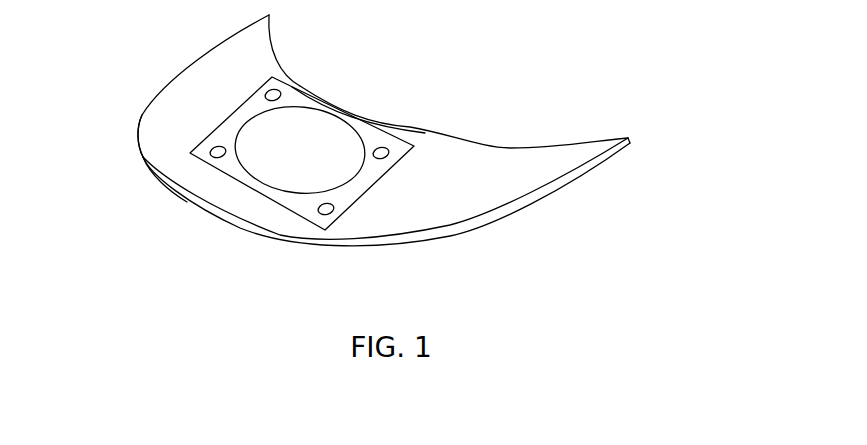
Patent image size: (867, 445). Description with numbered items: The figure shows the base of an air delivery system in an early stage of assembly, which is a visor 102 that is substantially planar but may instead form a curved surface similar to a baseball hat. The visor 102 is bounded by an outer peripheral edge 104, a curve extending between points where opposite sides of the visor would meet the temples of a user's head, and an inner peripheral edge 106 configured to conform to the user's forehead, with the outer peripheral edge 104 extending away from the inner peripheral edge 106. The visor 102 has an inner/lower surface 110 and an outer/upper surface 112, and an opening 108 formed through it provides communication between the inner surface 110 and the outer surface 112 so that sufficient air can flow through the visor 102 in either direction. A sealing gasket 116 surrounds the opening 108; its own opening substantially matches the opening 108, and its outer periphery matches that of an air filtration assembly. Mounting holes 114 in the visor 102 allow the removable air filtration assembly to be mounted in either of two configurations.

The visor 102 is at (477, 188).
The outer peripheral edge 104 is at (300, 240).
The inner peripheral edge 106 is at (495, 147).
The opening 108 is at (276, 118).
The inner/lower surface 110 is at (176, 197).
The outer/upper surface 112 is at (167, 152).
The mounting holes 114 is at (278, 89).
The sealing gasket 116 is at (360, 200).